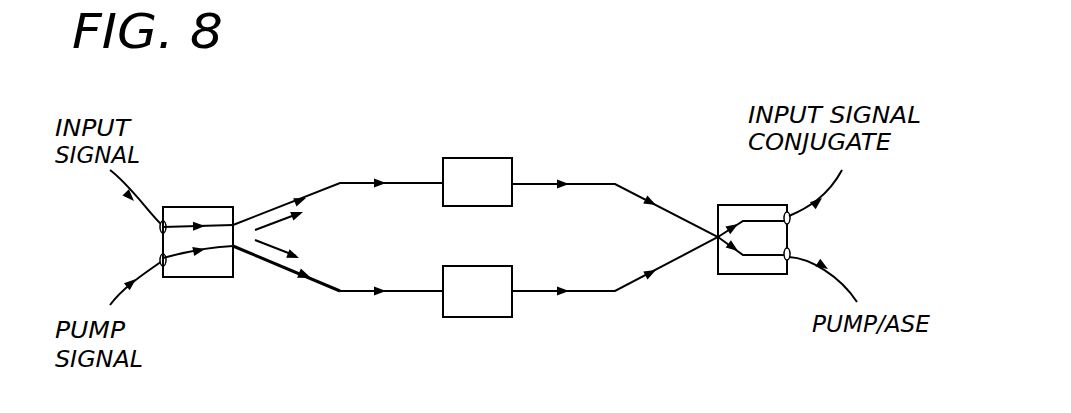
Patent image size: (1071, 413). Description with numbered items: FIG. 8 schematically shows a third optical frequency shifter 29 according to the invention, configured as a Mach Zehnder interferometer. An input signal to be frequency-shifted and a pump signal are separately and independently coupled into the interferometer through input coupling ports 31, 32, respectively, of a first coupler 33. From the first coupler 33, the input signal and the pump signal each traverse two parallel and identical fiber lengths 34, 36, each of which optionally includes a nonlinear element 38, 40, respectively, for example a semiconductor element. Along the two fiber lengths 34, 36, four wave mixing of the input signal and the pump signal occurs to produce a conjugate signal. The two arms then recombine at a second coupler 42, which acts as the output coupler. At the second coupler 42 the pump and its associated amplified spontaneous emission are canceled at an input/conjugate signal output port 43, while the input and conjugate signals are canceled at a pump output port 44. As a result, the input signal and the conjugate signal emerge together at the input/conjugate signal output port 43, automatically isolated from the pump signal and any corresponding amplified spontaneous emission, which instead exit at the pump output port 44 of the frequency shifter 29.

The optical phase conjugator 29 is at (247, 322).
The input coupling port 31 is at (162, 224).
The input coupling port 32 is at (162, 265).
The first coupler 33 is at (203, 212).
The fiber length 34 is at (317, 190).
The fiber length 36 is at (323, 287).
The nonlinear element 38 is at (480, 170).
The nonlinear element 40 is at (477, 303).
The second coupler 42 is at (746, 205).
The input/conjugate signal output port 43 is at (792, 221).
The pump output port 44 is at (791, 257).